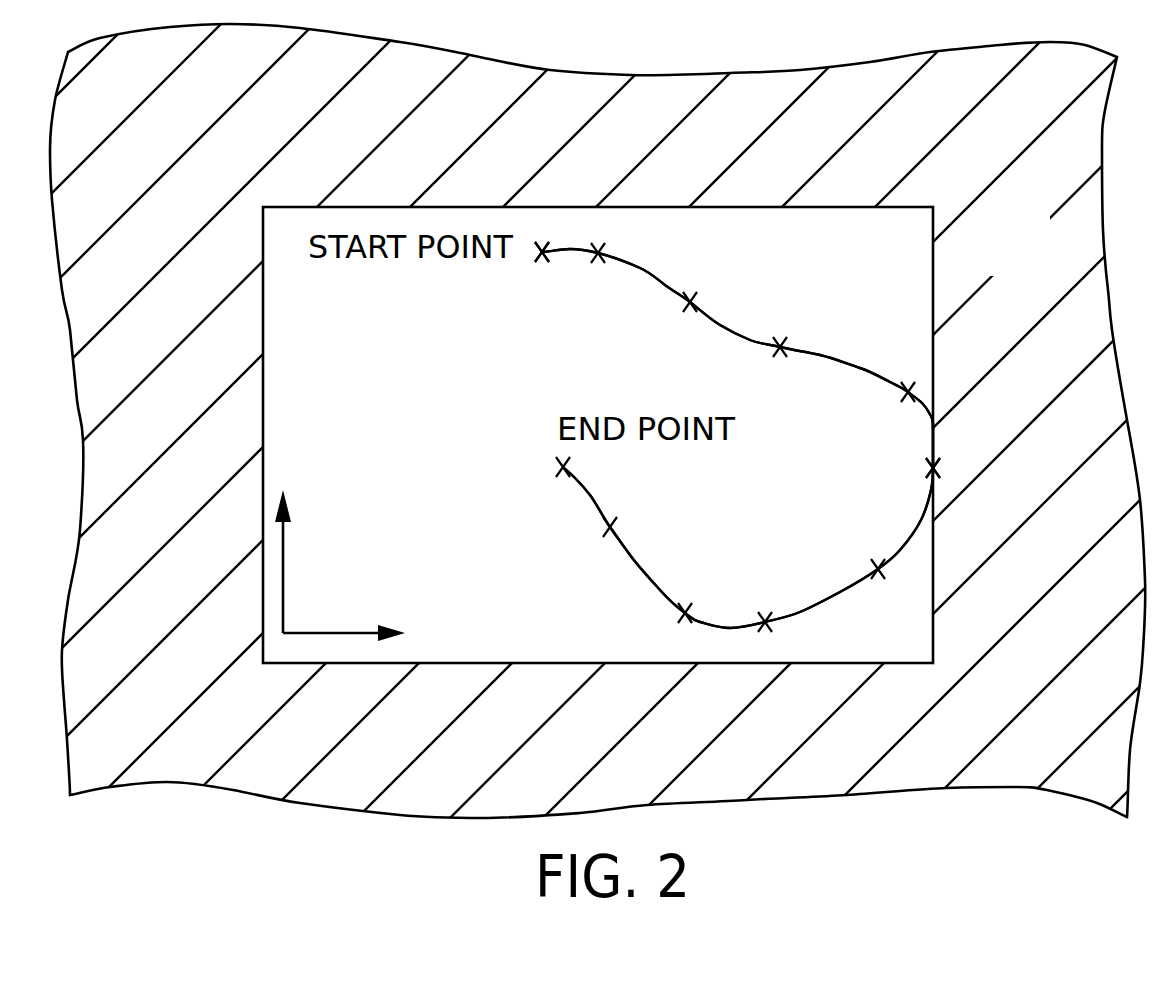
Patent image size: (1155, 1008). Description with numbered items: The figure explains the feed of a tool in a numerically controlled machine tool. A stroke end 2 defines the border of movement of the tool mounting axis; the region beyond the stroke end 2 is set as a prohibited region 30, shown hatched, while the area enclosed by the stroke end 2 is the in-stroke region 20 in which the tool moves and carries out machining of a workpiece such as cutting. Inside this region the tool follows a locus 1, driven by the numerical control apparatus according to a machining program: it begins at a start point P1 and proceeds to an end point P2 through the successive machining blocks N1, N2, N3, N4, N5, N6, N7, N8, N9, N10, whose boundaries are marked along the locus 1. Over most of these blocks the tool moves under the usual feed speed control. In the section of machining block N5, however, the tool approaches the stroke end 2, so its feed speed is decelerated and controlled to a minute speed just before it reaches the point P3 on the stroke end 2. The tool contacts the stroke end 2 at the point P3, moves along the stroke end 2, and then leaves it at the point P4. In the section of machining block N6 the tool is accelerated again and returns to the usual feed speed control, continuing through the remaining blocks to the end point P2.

The locus 1 is at (658, 280).
The stroke end 2 is at (263, 304).
The in-stroke region 20 is at (433, 402).
The prohibited region 30 is at (1048, 259).
The start point P1 is at (540, 258).
The end point P2 is at (555, 466).
The point of the stroke end P3 is at (933, 420).
The point P4 is at (926, 468).
The machining block N1 is at (566, 278).
The machining block N2 is at (640, 262).
The machining block N3 is at (726, 321).
The machining block N4 is at (840, 358).
The machining block N5 is at (906, 425).
The machining block N6 is at (902, 513).
The machining block N7 is at (825, 598).
The machining block N8 is at (728, 597).
The machining block N9 is at (640, 575).
The machining block N10 is at (611, 500).